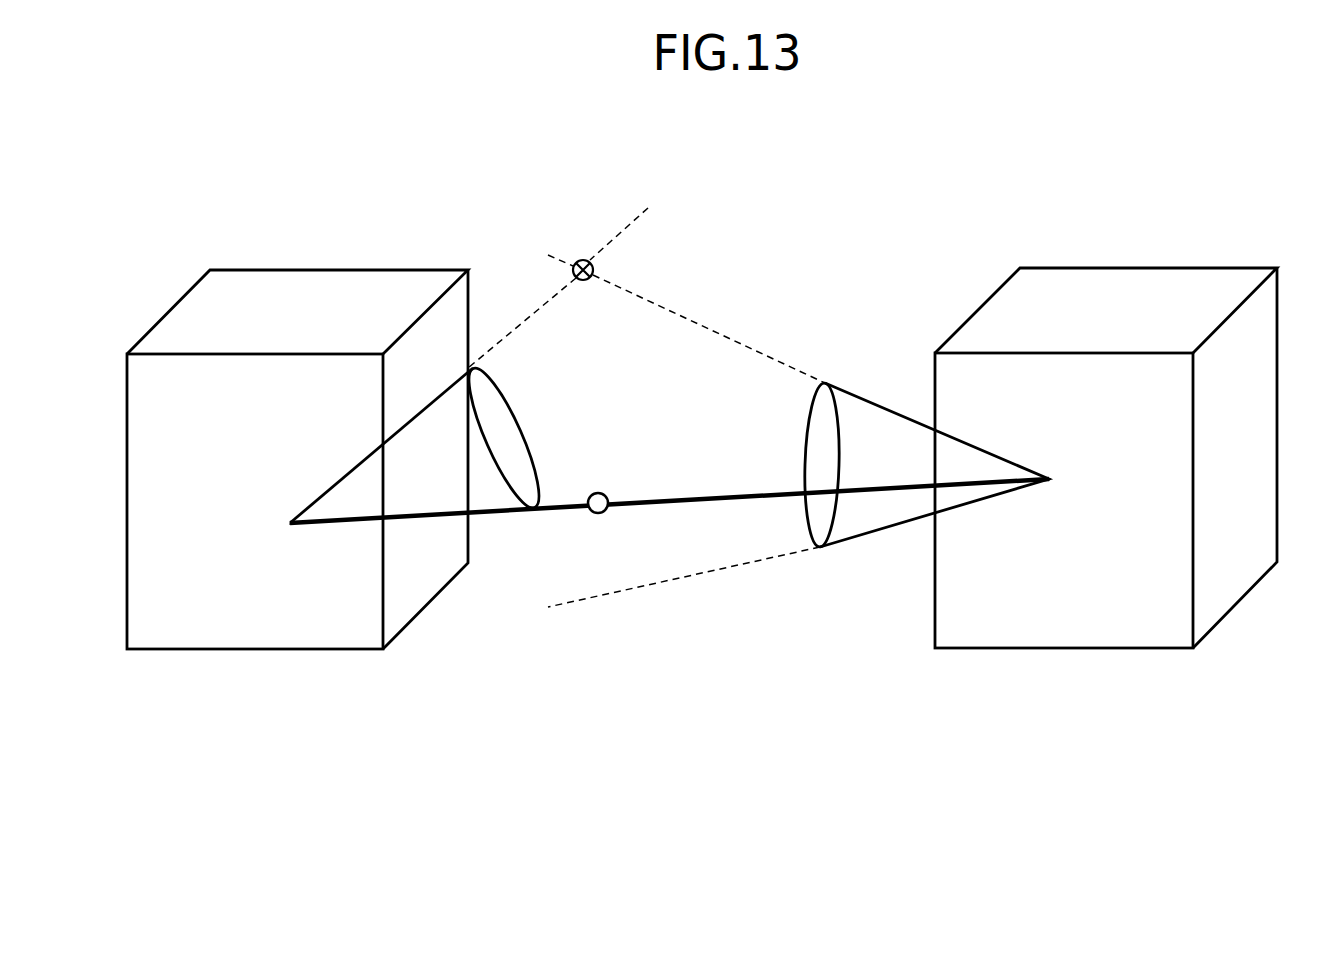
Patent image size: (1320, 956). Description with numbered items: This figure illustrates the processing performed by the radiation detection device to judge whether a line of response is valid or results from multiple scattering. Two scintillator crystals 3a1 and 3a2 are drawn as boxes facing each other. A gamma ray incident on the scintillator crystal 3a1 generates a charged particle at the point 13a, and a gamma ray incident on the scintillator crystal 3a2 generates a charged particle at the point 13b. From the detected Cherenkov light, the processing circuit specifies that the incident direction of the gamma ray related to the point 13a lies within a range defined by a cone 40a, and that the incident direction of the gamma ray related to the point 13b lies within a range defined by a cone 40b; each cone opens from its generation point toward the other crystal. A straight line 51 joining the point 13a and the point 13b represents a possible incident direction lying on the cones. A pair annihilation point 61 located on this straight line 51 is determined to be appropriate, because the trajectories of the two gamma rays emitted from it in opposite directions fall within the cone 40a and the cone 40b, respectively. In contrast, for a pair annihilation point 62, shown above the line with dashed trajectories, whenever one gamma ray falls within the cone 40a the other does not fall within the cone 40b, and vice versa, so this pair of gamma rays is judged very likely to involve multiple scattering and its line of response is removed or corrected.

The scintillator crystal 3a1 is at (324, 295).
The scintillator crystal 3a2 is at (1124, 290).
The cone 40a is at (435, 480).
The cone 40b is at (886, 433).
The point 13a is at (290, 527).
The point 13b is at (1049, 482).
The straight line 51 is at (493, 518).
The pair annihilation point 61 is at (598, 513).
The pair annihilation point 62 is at (582, 260).